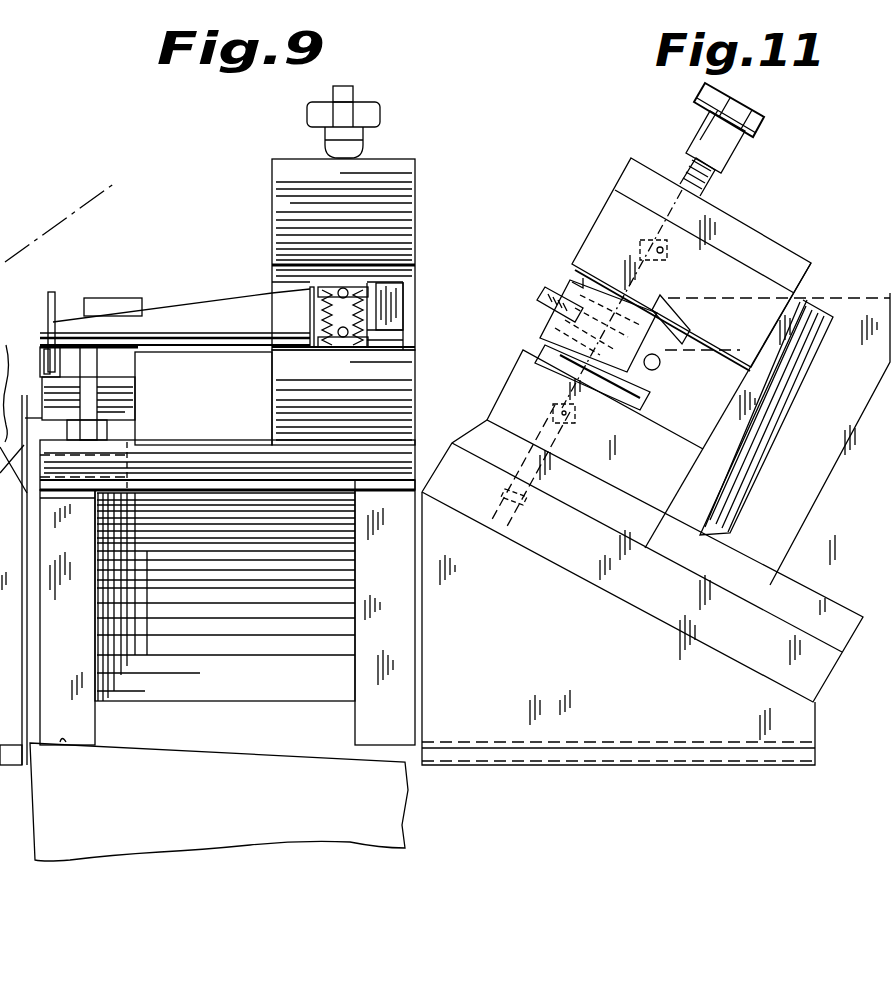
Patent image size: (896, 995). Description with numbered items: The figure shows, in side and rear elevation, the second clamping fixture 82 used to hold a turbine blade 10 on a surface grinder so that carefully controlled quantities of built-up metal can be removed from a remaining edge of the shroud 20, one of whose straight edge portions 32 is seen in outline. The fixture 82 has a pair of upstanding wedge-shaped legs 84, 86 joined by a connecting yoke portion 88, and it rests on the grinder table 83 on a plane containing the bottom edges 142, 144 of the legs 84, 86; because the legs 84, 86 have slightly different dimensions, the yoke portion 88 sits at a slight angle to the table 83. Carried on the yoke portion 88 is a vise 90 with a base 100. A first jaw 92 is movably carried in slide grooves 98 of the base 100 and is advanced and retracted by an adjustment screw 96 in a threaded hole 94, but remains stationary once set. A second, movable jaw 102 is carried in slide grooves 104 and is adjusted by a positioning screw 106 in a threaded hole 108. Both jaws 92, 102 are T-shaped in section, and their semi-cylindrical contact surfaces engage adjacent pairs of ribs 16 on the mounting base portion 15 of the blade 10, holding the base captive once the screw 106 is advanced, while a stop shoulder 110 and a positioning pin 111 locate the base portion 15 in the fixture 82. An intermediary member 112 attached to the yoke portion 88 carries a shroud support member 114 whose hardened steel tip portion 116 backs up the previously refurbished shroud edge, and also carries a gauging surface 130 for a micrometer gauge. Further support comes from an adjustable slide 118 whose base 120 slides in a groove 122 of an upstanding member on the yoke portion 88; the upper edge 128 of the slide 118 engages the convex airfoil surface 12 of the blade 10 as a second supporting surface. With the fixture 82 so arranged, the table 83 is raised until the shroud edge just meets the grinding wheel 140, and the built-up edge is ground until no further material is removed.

In FIG. 9, the turbine blade 10 is at (206, 291).
In FIG. 9, the convex airfoil surface 12 is at (165, 332).
In FIG. 9, the mounting base portion 15 is at (322, 308).
In FIG. 11, the mounting base portion 15 is at (553, 297).
In FIG. 9, the ribs 16 is at (7, 291).
In FIG. 9, the shroud 20 is at (52, 294).
In FIG. 9, the straight edge portion of shroud 32 is at (19, 205).
In FIG. 9, the second fixture 82 is at (216, 712).
In FIG. 11, the second fixture 82 is at (650, 785).
In FIG. 9, the table 83 is at (172, 835).
In FIG. 9, the leg 84 is at (78, 720).
In FIG. 9, the leg 86 is at (368, 722).
In FIG. 11, the leg 86 is at (795, 728).
In FIG. 9, the yoke portion 88 is at (248, 462).
In FIG. 11, the yoke portion 88 is at (820, 668).
In FIG. 9, the vise 90 is at (424, 197).
In FIG. 11, the vise 90 is at (597, 203).
In FIG. 9, the first jaw 92 is at (340, 340).
In FIG. 11, the first jaw 92 is at (553, 352).
In FIG. 11, the threaded hole 94 is at (543, 478).
In FIG. 11, the adjustment screw 96 is at (497, 522).
In FIG. 11, the slide grooves 98 is at (585, 458).
In FIG. 9, the vise base 100 is at (393, 396).
In FIG. 11, the vise base 100 is at (633, 527).
In FIG. 9, the second movable jaw 102 is at (343, 285).
In FIG. 11, the second movable jaw 102 is at (597, 283).
In FIG. 11, the slide grooves 104 is at (620, 220).
In FIG. 11, the positioning screw 106 is at (706, 178).
In FIG. 11, the threaded hole 108 is at (663, 207).
In FIG. 9, the stop shoulder 110 is at (393, 297).
In FIG. 11, the stop shoulder 110 is at (548, 327).
In FIG. 11, the positioning pin 111 is at (661, 362).
In FIG. 11, the intermediary member 112 is at (735, 462).
In FIG. 9, the shroud support member 114 is at (42, 380).
In FIG. 9, the tip portion 116 is at (42, 372).
In FIG. 9, the adjustable slide 118 is at (88, 368).
In FIG. 9, the slide base 120 is at (103, 433).
In FIG. 9, the groove 122 is at (63, 432).
In FIG. 9, the upper edge of slide 128 is at (84, 340).
In FIG. 9, the gauging surface 130 is at (97, 300).
In FIG. 11, the gauging surface 130 is at (850, 298).
In FIG. 9, the grinding wheel 140 is at (80, 220).
In FIG. 9, the bottom edge of leg 142 is at (66, 750).
In FIG. 9, the bottom edge of leg 144 is at (386, 750).